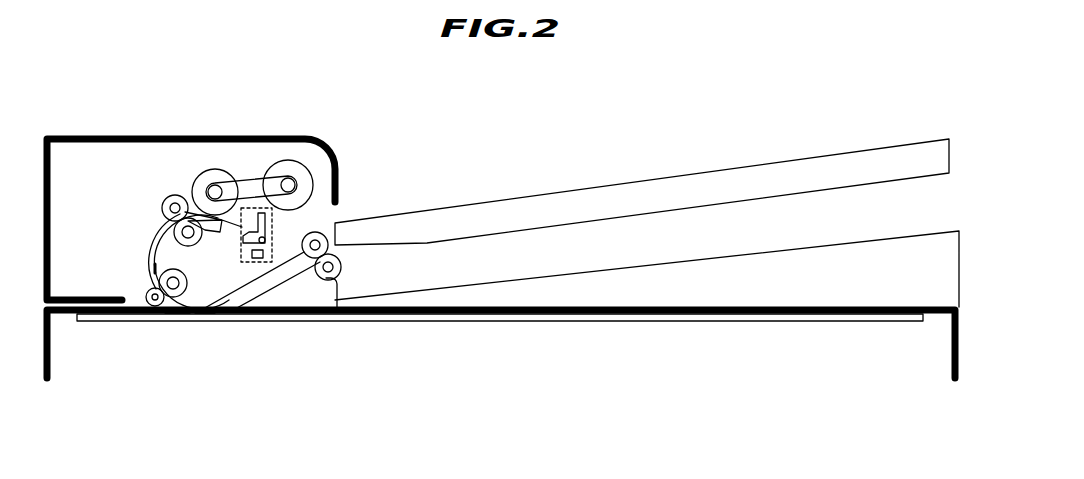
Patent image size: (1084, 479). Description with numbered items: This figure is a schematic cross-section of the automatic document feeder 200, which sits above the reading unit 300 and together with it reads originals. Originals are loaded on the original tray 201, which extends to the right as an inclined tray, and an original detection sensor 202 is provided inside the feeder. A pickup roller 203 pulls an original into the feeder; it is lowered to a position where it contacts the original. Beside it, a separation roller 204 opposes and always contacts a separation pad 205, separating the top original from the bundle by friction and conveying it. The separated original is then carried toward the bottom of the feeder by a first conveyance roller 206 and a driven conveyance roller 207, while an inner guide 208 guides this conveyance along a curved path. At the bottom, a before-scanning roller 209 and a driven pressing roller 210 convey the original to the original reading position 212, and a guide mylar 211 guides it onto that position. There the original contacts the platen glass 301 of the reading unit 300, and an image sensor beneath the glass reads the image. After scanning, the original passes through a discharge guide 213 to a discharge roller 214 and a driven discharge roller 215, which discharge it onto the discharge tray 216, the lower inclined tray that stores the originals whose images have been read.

The automatic document feeder 200 is at (72, 137).
The original tray 201 is at (853, 151).
The original detection sensor 202 is at (241, 253).
The pickup roller 203 is at (288, 161).
The separation roller 204 is at (218, 170).
The separation pad 205 is at (193, 211).
The first conveyance roller 206 is at (164, 201).
The driven conveyance roller 207 is at (163, 225).
The inner guide 208 is at (153, 243).
The before-scanning roller 209 is at (150, 268).
The driven pressing roller 210 is at (150, 306).
The guide mylar 211 is at (176, 313).
The original reading position 212 is at (201, 313).
The discharge guide 213 is at (305, 300).
The discharge roller 214 is at (326, 236).
The driven discharge roller 215 is at (338, 277).
The discharge tray 216 is at (834, 245).
The reading unit 300 is at (47, 380).
The platen glass 301 is at (255, 322).